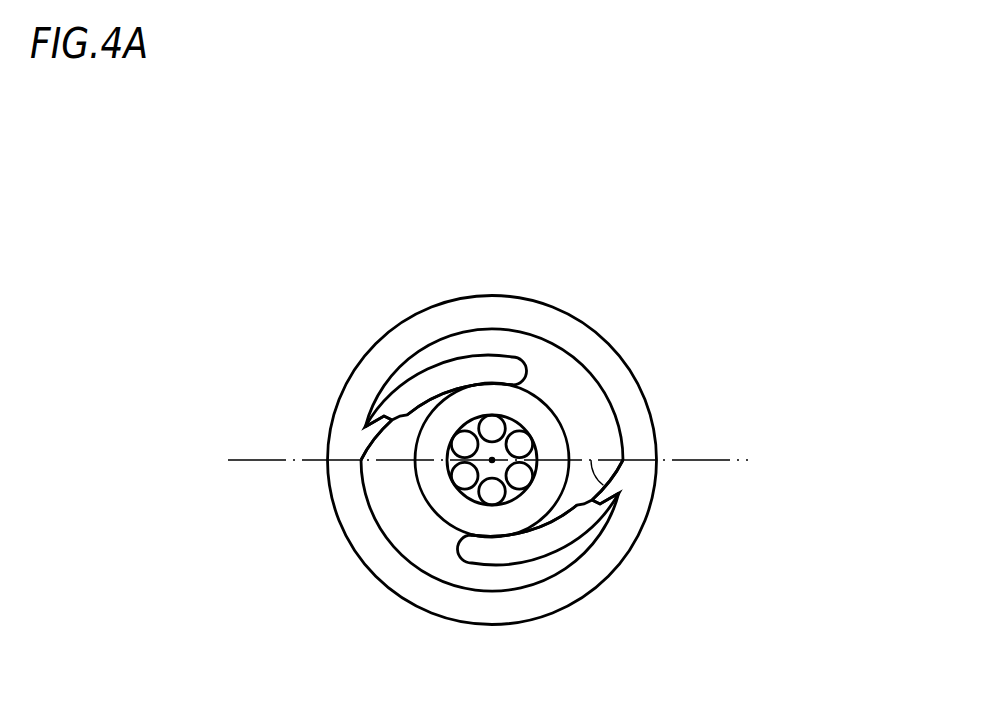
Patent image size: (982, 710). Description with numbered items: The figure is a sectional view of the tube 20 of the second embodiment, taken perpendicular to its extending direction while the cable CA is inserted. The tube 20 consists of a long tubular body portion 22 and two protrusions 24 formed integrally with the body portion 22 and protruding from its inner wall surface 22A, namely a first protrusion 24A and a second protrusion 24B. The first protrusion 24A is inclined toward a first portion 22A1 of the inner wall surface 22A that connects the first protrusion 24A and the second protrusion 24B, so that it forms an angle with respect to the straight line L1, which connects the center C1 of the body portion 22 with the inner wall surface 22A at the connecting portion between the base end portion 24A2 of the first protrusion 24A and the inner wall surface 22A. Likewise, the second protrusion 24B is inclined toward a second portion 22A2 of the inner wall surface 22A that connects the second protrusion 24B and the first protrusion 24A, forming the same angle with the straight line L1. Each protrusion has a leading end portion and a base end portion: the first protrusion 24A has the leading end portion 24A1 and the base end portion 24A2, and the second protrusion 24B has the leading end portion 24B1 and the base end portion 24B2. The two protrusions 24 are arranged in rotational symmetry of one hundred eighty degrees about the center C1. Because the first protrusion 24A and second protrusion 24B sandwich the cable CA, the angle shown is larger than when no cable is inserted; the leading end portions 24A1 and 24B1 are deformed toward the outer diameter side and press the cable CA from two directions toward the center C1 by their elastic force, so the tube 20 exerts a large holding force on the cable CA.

The tube 20 is at (660, 682).
The body portion 22 is at (492, 318).
The inner wall surface 22A is at (467, 437).
The first portion of the inner wall surface 22A1 is at (385, 538).
The second portion of the inner wall surface 22A2 is at (573, 355).
The protrusions 24 is at (230, 317).
The first protrusion 24A is at (730, 518).
The leading end portion of the first protrusion 24A1 is at (527, 540).
The base end portion of the first protrusion 24A2 is at (616, 496).
The second protrusion 24B is at (255, 260).
The leading end portion of the second protrusion 24B1 is at (450, 380).
The base end portion of the second protrusion 24B2 is at (378, 418).
The cable CA is at (560, 420).
The center of the body portion C1 is at (491, 461).
The straight line L1 is at (308, 458).